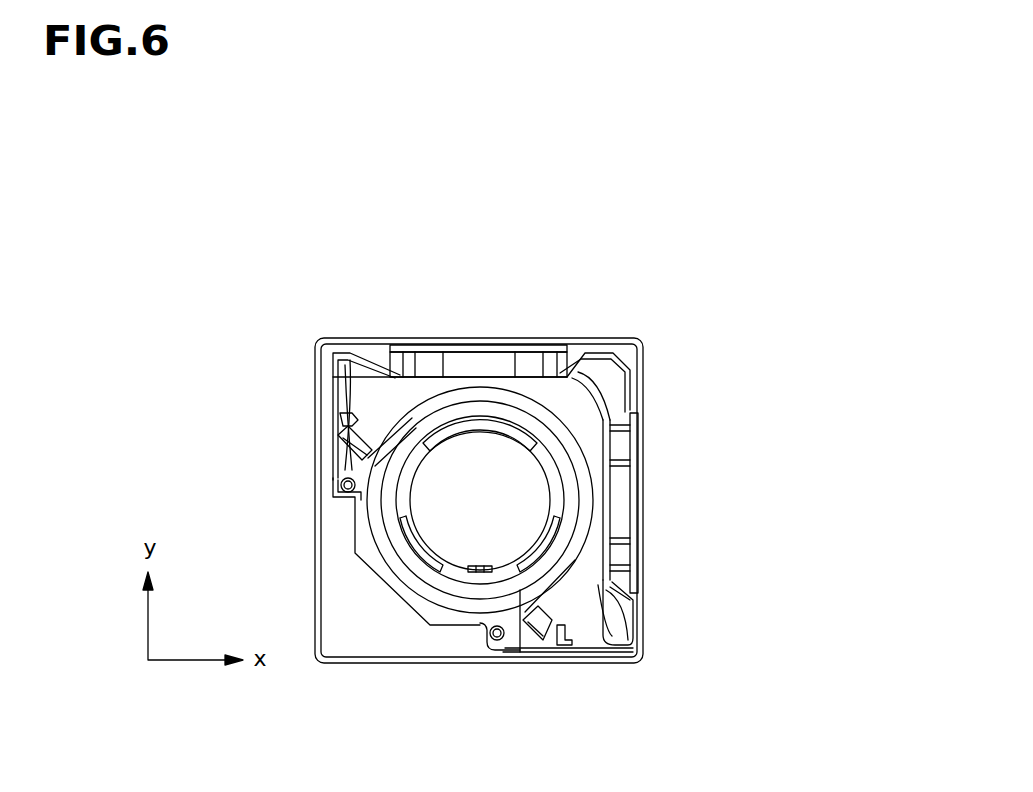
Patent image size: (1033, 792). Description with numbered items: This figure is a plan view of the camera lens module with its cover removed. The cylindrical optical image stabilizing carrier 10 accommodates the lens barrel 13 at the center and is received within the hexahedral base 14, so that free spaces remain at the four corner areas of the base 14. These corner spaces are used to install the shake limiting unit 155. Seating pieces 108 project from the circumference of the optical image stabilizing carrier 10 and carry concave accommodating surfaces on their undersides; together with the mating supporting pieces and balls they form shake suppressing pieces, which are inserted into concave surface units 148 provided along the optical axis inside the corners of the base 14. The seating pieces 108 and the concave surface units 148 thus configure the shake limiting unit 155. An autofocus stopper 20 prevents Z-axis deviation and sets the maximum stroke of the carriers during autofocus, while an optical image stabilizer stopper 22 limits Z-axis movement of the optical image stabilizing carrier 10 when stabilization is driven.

The optical image stabilizing carrier 10 is at (470, 600).
The lens barrel 13 is at (542, 450).
The base 14 is at (378, 345).
The autofocus stopper 20 is at (378, 640).
The optical image stabilizer stopper 22 is at (600, 447).
The seating piece 108 is at (345, 360).
The concave surface unit 148 is at (350, 354).
The shake limiting unit 155 is at (586, 275).